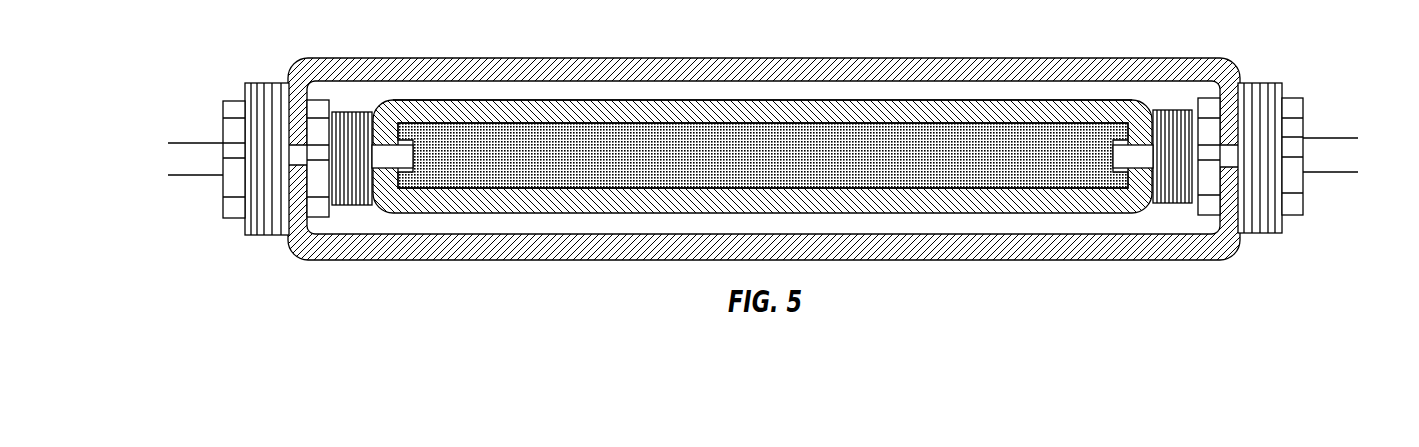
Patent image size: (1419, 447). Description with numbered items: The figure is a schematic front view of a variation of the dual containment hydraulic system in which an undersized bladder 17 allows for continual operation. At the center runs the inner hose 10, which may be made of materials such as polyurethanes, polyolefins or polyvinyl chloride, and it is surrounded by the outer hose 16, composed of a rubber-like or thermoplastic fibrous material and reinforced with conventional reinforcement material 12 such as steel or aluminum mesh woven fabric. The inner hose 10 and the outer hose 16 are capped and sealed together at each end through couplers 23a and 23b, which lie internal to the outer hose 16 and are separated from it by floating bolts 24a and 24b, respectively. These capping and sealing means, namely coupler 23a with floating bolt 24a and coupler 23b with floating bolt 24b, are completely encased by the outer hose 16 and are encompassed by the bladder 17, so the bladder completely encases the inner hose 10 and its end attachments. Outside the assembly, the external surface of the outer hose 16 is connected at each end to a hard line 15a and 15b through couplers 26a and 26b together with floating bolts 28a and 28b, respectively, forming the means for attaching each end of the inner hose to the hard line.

The inner hose 10 is at (762, 120).
The reinforcement material 12 is at (763, 207).
The hard line 15a is at (173, 180).
The hard line 15b is at (1356, 175).
The outer hose 16 is at (763, 140).
The bladder 17 is at (762, 64).
The coupler 23a is at (338, 116).
The coupler 23b is at (1190, 114).
The floating bolt 24a is at (278, 184).
The floating bolt 24b is at (1251, 183).
The coupler 26a is at (237, 140).
The coupler 26b is at (1290, 137).
The floating bolt 28a is at (195, 140).
The floating bolt 28b is at (1334, 136).